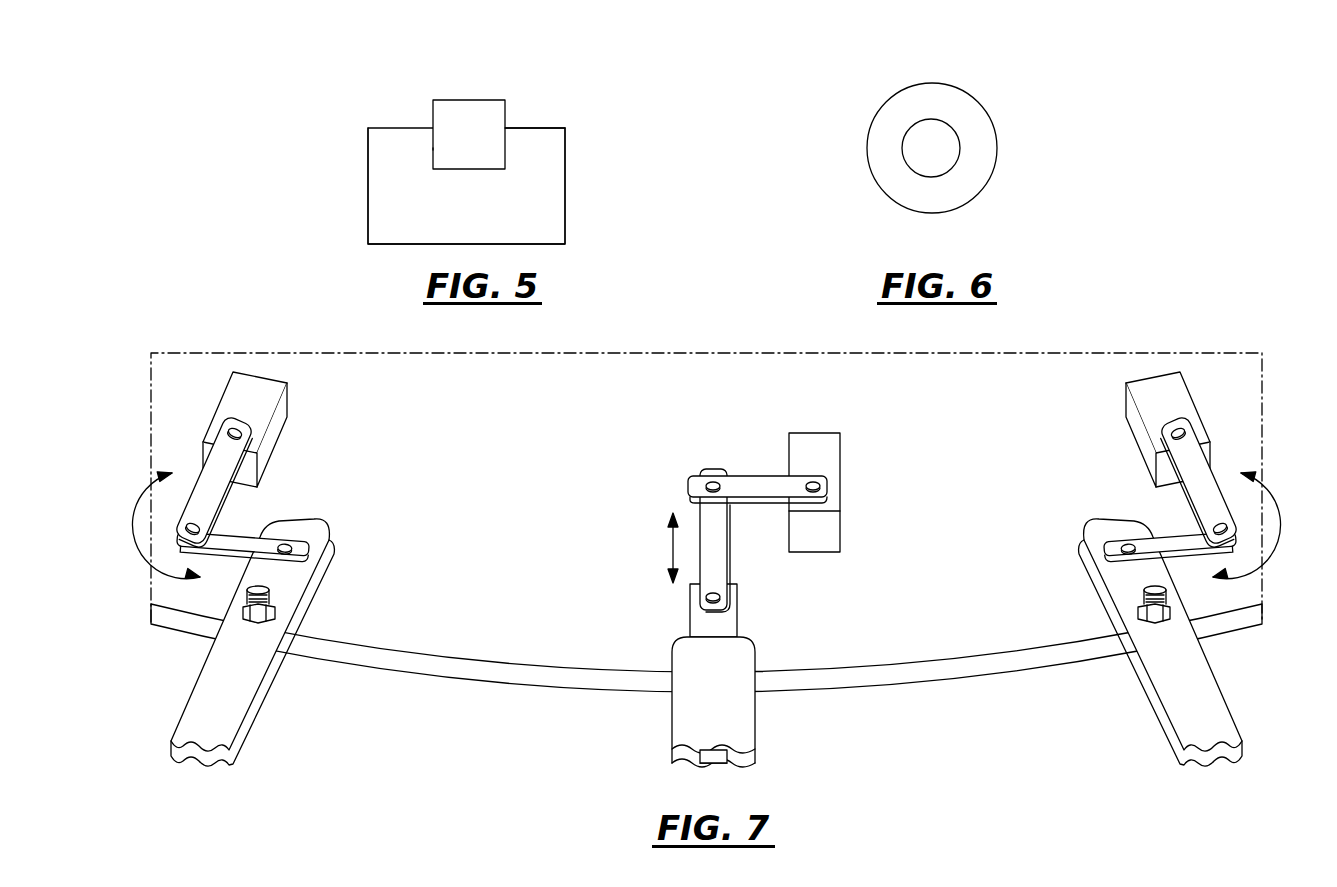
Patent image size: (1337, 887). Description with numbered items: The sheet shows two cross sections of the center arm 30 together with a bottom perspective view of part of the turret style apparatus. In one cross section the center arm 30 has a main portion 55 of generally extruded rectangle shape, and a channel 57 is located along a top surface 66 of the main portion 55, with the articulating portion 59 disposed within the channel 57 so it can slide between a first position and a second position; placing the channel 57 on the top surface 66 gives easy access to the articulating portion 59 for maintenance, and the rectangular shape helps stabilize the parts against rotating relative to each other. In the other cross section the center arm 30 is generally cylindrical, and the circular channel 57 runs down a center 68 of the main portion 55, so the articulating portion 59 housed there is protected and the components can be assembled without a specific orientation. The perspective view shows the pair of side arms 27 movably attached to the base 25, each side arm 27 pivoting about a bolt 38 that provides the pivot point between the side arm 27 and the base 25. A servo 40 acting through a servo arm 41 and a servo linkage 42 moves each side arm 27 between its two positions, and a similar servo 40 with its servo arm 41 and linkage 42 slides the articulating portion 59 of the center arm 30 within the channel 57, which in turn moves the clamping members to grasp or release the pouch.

In FIG. 7, the base 25 is at (615, 423).
In FIG. 7, the side arm 27 is at (222, 713).
In FIG. 5, the center arm 30 is at (590, 110).
In FIG. 6, the center arm 30 is at (1006, 108).
In FIG. 7, the center arm 30 is at (738, 728).
In FIG. 7, the bolt 38 is at (247, 619).
In FIG. 7, the servo 40 is at (260, 396).
In FIG. 7, the servo arm 41 is at (212, 483).
In FIG. 7, the servo linkage 42 is at (247, 542).
In FIG. 5, the main portion 55 is at (547, 229).
In FIG. 6, the main portion 55 is at (975, 170).
In FIG. 7, the main portion 55 is at (683, 757).
In FIG. 5, the channel 57 is at (433, 148).
In FIG. 6, the channel 57 is at (936, 119).
In FIG. 5, the articulating portion 59 is at (485, 116).
In FIG. 6, the articulating portion 59 is at (921, 163).
In FIG. 7, the articulating portion 59 is at (725, 627).
In FIG. 5, the top surface 66 is at (530, 127).
In FIG. 6, the center 68 is at (960, 143).